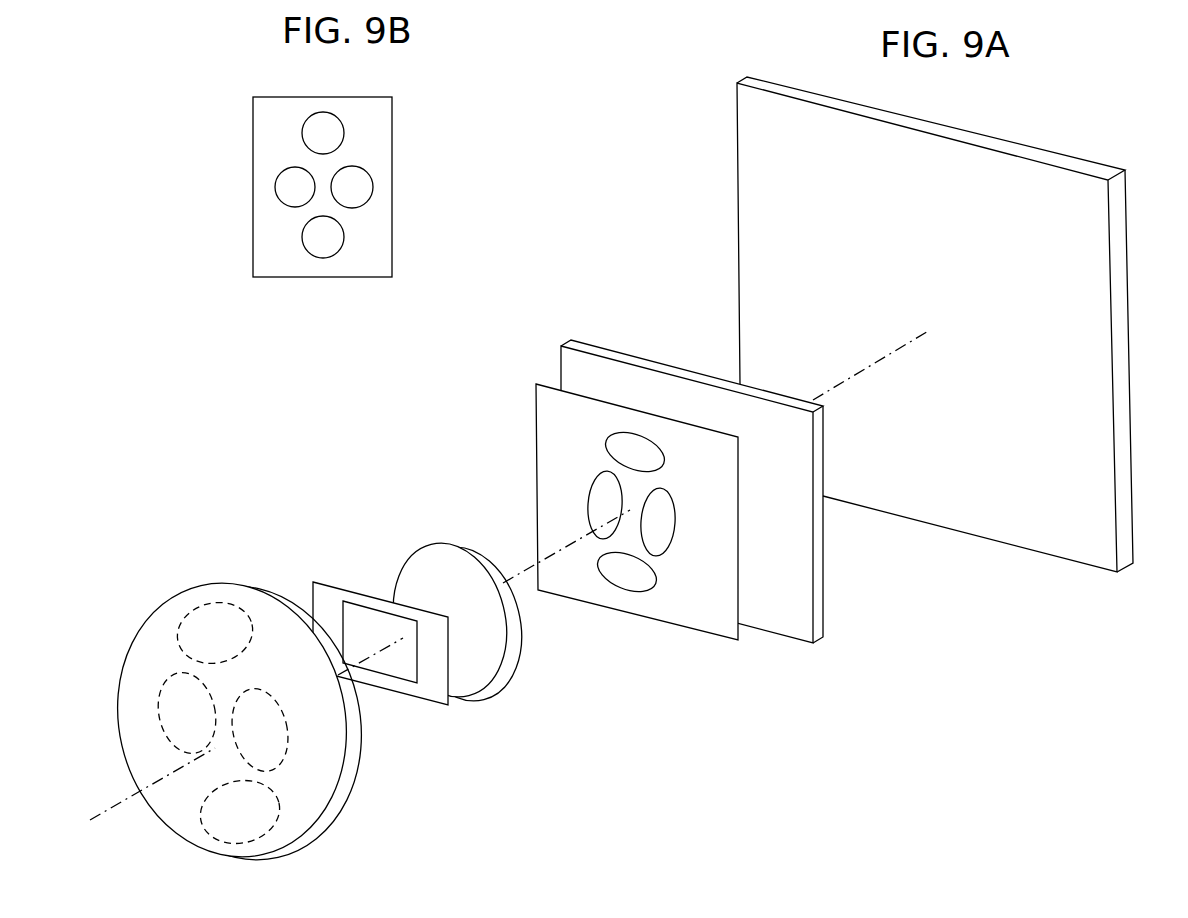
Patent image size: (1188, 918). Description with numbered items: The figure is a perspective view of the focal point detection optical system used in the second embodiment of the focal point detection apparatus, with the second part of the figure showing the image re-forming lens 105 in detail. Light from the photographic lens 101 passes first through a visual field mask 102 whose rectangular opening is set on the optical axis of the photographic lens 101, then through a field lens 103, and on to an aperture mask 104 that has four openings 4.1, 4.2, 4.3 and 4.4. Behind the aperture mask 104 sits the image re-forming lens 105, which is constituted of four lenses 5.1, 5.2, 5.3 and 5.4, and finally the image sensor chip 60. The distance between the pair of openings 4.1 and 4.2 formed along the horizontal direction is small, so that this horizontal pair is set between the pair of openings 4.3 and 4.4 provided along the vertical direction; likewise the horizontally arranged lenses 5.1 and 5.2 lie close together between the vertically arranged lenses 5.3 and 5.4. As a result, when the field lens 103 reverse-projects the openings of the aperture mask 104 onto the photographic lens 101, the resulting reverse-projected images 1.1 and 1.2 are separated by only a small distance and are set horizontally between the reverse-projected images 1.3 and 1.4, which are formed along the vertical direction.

In FIG. 9A, the image sensor chip 60 is at (732, 108).
In FIG. 9A, the photographic lens 101 is at (128, 632).
In FIG. 9A, the reverse-projected image 1.1 is at (186, 713).
In FIG. 9A, the reverse-projected image 1.2 is at (260, 730).
In FIG. 9A, the reverse-projected image 1.3 is at (240, 812).
In FIG. 9A, the reverse-projected image 1.4 is at (215, 633).
In FIG. 9A, the visual field mask 102 is at (410, 697).
In FIG. 9A, the field lens 103 is at (433, 542).
In FIG. 9A, the aperture mask 104 is at (537, 420).
In FIG. 9A, the opening 4.1 is at (683, 522).
In FIG. 9A, the opening 4.2 is at (583, 505).
In FIG. 9A, the opening 4.3 is at (614, 443).
In FIG. 9A, the opening 4.4 is at (607, 572).
In FIG. 9B, the image re-forming lens 105 is at (392, 107).
In FIG. 9A, the image re-forming lens 105 is at (620, 348).
In FIG. 9B, the lens 5.1 is at (367, 180).
In FIG. 9B, the lens 5.2 is at (275, 187).
In FIG. 9B, the lens 5.3 is at (326, 118).
In FIG. 9B, the lens 5.4 is at (325, 253).